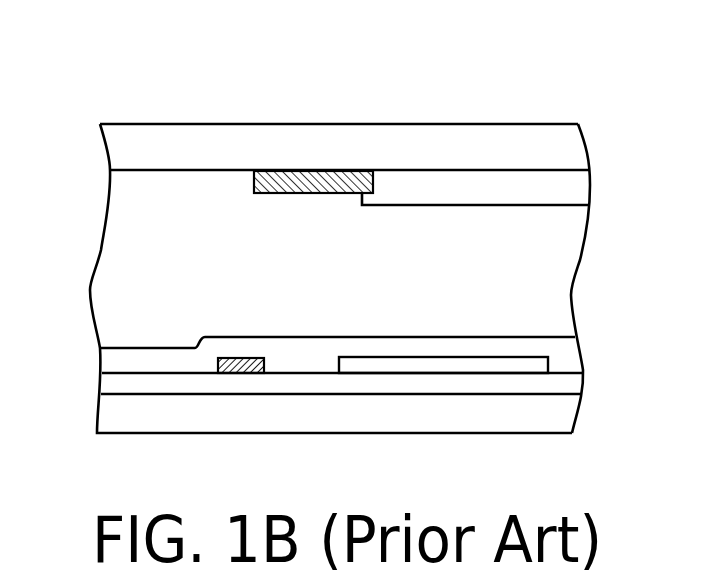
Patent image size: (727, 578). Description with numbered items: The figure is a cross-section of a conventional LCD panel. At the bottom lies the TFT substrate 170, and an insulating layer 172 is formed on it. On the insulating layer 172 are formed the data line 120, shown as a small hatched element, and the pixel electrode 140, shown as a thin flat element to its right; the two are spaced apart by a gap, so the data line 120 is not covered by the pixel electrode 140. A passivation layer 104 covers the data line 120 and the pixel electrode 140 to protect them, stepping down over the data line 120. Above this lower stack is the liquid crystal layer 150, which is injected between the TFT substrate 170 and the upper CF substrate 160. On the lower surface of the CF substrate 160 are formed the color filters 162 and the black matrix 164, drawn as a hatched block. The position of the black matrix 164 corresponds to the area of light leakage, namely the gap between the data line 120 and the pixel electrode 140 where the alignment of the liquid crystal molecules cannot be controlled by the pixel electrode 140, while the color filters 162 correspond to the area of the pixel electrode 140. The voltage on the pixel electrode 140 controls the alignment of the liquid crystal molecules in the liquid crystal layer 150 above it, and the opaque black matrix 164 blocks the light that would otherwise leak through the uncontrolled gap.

The liquid crystal layer 150 is at (120, 157).
The color filter substrate 160 is at (488, 134).
The color filters 162 is at (563, 186).
The black matrix 164 is at (322, 177).
The passivation layer 104 is at (408, 350).
The data line 120 is at (248, 358).
The pixel electrode 140 is at (540, 368).
The insulating layer 172 is at (575, 388).
The thin film transistor substrate 170 is at (530, 423).